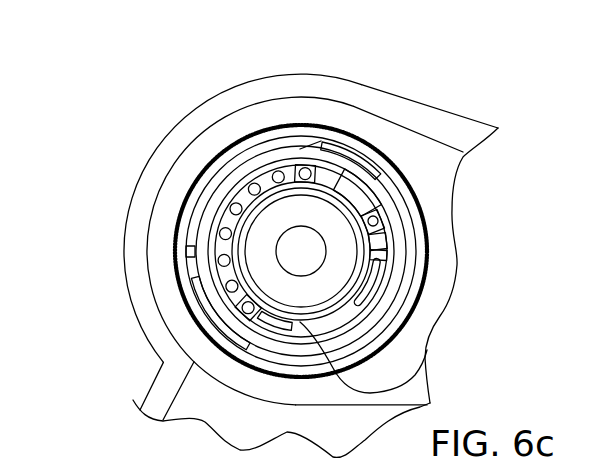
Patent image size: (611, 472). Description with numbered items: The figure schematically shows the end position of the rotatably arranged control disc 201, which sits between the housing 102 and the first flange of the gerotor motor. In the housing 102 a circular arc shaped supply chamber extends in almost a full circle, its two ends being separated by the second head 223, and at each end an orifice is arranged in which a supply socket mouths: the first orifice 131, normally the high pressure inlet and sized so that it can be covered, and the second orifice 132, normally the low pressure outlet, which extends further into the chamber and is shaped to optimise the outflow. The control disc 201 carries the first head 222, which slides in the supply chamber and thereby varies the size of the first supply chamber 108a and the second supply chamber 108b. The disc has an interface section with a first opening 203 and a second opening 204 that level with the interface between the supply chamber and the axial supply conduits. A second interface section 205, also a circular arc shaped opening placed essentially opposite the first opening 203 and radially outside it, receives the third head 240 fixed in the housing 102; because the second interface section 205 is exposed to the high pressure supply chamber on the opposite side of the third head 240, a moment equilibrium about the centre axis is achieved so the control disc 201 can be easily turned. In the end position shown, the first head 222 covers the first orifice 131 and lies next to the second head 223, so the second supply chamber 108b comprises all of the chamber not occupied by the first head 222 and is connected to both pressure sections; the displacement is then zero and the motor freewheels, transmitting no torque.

The housing 102 is at (178, 190).
The first supply chamber 108a is at (378, 245).
The second supply chamber 108b is at (425, 375).
The control disc 201 is at (263, 360).
The second interface section 205 is at (278, 150).
The third head 240 is at (188, 250).
The second opening 204 is at (267, 305).
The first opening 203 is at (318, 326).
The first head 222 is at (333, 190).
The first orifice 131 is at (365, 197).
The second head 223 is at (387, 250).
The second orifice 132 is at (375, 290).